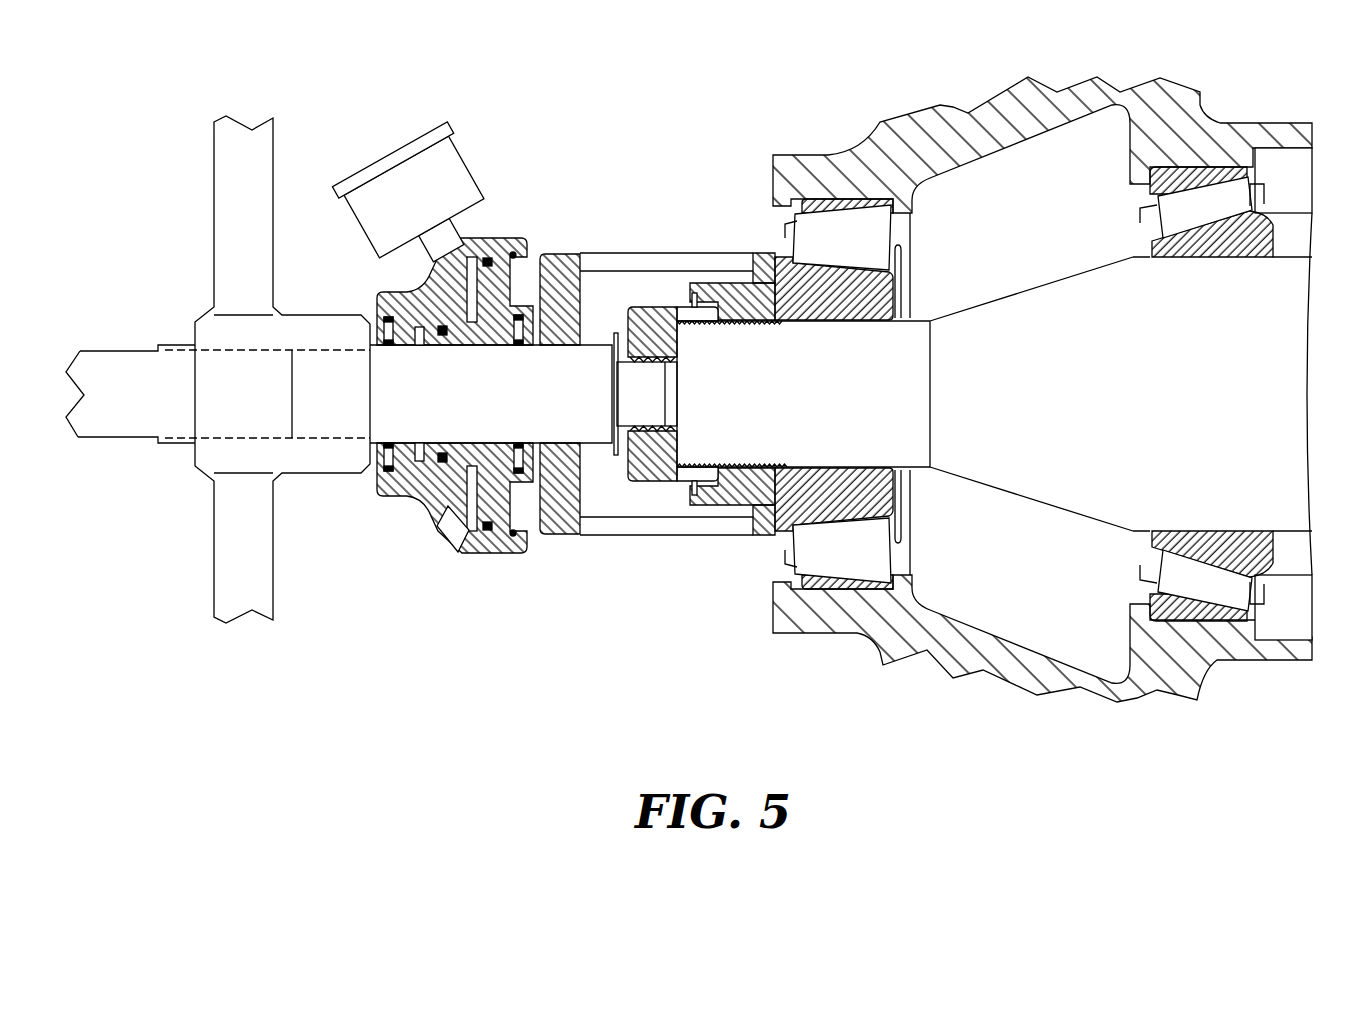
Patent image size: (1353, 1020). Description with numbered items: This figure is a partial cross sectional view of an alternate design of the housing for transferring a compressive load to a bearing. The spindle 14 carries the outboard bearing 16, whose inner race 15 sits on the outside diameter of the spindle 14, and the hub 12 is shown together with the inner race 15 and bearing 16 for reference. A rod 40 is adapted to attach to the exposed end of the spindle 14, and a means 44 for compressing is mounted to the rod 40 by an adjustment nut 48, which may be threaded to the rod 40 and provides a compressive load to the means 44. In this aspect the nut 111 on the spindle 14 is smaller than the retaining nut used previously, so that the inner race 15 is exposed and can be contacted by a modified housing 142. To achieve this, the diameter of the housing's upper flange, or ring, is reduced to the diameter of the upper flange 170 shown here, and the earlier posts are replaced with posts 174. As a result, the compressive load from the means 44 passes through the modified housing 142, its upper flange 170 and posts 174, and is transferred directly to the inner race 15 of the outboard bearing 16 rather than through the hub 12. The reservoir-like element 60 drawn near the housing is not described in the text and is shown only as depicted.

The hub 12 is at (832, 155).
The spindle 14 is at (744, 408).
The inner race 15 is at (840, 312).
The outboard bearing 16 is at (925, 280).
The rod 40 is at (112, 430).
The means for compressing 44 is at (497, 168).
The adjustment nut 48 is at (326, 464).
The lubricant reservoir 60 is at (397, 155).
The nut 111 is at (708, 500).
The modified housing 142 is at (657, 358).
The upper flange 170 is at (561, 254).
The posts 174 is at (711, 255).